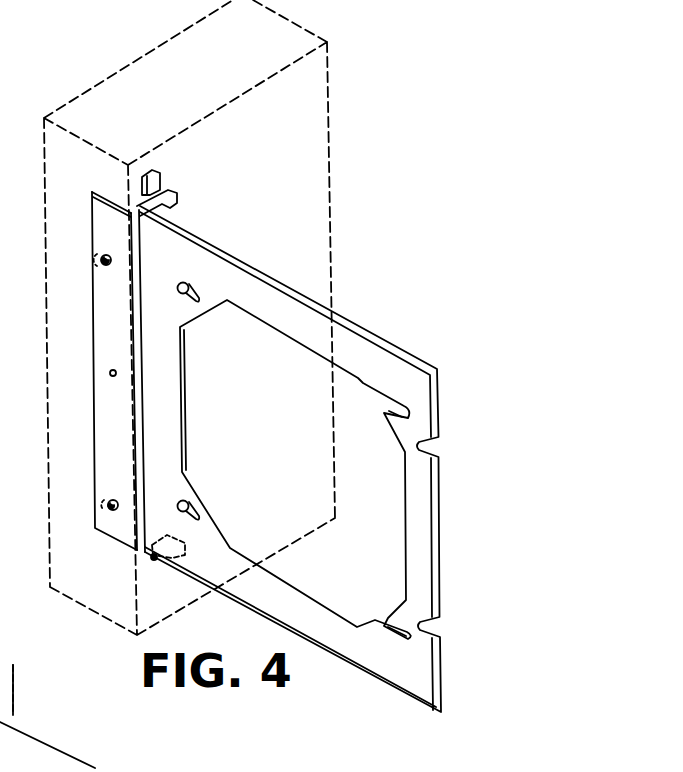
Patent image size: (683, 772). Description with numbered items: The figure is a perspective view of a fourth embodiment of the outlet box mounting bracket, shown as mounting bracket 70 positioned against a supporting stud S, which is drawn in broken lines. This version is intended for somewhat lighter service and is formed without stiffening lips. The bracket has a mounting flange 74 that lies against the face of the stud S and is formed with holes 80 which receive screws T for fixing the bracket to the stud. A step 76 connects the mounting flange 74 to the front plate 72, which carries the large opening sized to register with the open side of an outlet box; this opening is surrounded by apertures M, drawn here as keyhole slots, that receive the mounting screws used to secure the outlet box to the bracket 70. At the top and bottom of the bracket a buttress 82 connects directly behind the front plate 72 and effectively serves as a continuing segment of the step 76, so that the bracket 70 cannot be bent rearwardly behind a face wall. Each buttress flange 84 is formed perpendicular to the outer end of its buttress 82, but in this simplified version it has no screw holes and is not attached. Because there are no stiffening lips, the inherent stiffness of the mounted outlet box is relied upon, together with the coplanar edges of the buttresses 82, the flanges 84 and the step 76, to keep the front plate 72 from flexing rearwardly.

The mounting bracket 70 is at (370, 325).
The front plate 72 is at (283, 318).
The mounting flange 74 is at (110, 301).
The step 76 is at (130, 210).
The holes 80 is at (108, 255).
The buttress 82 is at (165, 200).
The buttress flange 84 is at (153, 176).
The stud S is at (313, 134).
The screws T is at (96, 262).
The apertures M is at (182, 298).